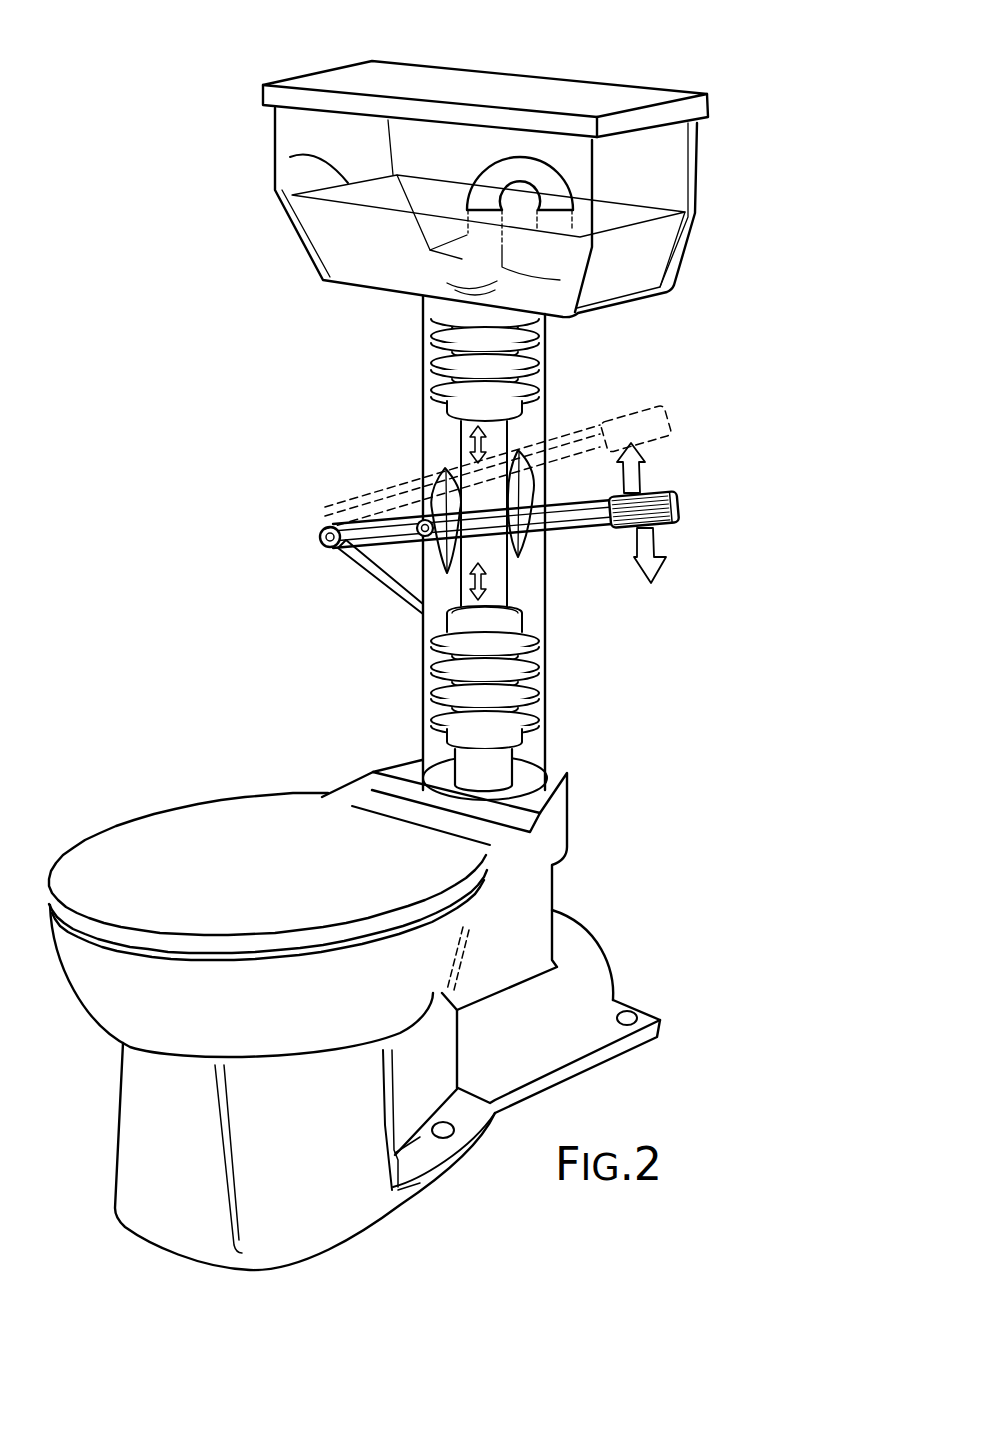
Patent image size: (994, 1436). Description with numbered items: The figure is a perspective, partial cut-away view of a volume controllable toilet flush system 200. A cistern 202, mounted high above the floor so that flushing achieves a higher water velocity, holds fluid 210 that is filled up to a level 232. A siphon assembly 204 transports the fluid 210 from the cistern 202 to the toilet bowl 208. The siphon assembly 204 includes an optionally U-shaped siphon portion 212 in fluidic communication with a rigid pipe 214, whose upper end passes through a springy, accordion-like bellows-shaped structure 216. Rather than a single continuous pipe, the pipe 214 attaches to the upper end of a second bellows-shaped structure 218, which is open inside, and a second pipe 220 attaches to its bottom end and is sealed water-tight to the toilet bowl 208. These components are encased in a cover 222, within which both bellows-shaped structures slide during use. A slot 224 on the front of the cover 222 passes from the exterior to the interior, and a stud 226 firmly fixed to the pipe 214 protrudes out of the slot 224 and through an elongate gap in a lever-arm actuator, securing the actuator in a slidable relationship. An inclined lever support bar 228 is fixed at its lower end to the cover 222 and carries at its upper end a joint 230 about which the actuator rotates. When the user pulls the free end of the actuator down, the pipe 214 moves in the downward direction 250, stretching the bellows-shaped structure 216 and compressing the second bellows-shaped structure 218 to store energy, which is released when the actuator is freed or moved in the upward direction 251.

The volume controllable toilet flush system 200 is at (396, 656).
The cistern 202 is at (673, 177).
The siphon assembly 204 is at (440, 417).
The toilet bowl 208 is at (100, 995).
The fluid 210 is at (351, 247).
The siphon portion 212 is at (522, 167).
The pipe 214 is at (467, 235).
The bellows-shaped structure 216 is at (527, 358).
The second bellows-shaped structure 218 is at (524, 688).
The second pipe 220 is at (482, 772).
The cover 222 is at (546, 608).
The slot 224 is at (438, 478).
The stud 226 is at (420, 522).
The lever support bar 228 is at (379, 587).
The joint 230 is at (323, 532).
The level 232 is at (290, 157).
The downward direction 250 is at (650, 551).
The upward direction 251 is at (637, 476).